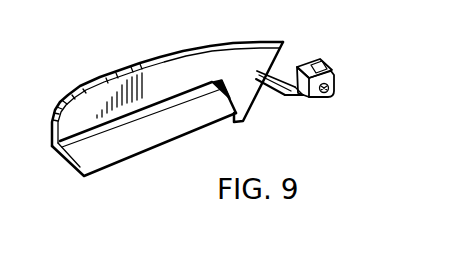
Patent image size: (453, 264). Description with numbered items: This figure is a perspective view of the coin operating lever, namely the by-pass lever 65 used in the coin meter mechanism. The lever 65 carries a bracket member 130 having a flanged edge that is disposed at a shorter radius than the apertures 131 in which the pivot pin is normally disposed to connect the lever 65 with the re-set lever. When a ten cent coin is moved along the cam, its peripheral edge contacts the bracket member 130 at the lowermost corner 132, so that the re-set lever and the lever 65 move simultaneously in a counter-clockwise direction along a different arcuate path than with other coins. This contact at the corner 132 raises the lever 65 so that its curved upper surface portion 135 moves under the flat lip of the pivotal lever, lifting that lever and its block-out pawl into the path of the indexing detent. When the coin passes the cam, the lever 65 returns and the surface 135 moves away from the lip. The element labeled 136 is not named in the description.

The by-pass lever 65 is at (158, 78).
The bracket member 130 is at (281, 93).
The apertures 131 is at (337, 82).
The lowermost corner 132 is at (301, 98).
The upper surface portion 135 is at (72, 98).
The flange strip 136 is at (148, 135).